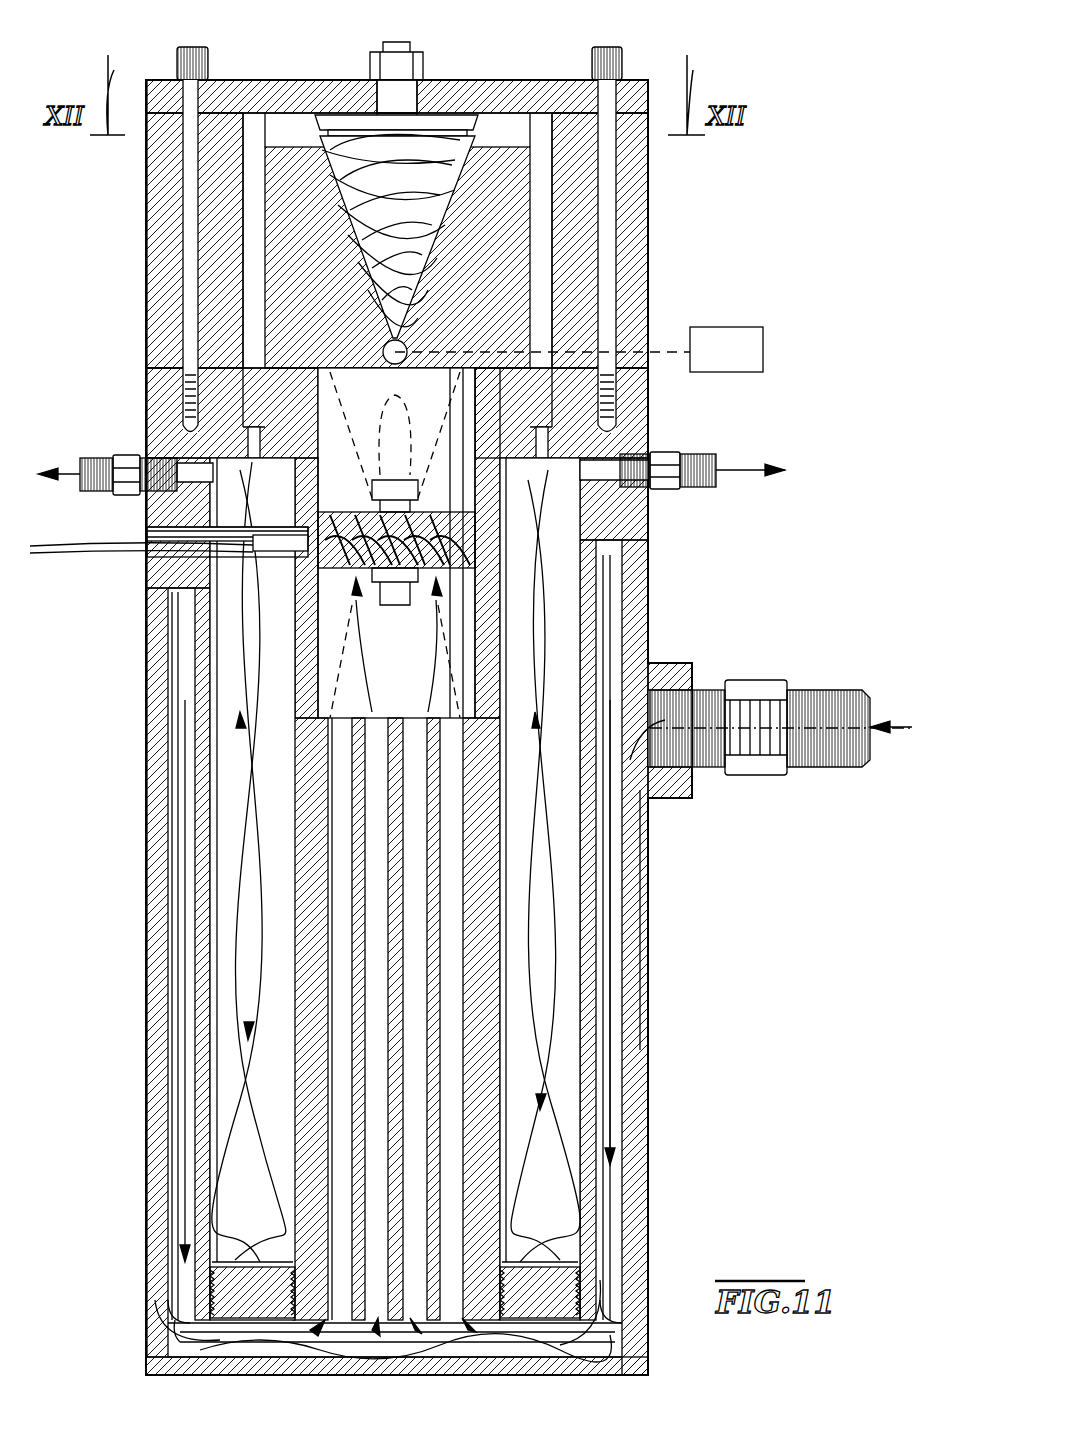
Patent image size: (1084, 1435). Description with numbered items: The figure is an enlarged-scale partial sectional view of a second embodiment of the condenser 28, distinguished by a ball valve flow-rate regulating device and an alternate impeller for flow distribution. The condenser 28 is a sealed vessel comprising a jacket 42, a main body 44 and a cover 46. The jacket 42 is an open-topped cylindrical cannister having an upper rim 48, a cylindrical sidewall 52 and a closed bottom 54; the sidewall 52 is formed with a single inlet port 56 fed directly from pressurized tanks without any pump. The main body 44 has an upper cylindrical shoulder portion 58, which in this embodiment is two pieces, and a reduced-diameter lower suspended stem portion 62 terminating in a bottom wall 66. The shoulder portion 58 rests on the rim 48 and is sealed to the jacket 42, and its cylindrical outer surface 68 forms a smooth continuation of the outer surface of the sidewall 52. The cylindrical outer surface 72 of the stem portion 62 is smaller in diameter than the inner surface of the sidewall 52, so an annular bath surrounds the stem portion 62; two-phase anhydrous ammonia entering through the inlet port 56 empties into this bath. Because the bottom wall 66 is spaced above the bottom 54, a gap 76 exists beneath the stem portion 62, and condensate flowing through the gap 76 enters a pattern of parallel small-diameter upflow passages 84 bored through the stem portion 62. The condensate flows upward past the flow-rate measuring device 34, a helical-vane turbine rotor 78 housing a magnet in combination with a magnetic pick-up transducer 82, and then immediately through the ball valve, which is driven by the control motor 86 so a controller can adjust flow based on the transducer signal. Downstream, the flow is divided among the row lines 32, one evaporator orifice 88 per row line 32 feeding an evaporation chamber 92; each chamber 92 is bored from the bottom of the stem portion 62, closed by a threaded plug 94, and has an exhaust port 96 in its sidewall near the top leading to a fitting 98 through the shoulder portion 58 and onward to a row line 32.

The condenser 28 is at (790, 58).
The row lines 32 is at (50, 480).
The flow-rate measuring device 34 is at (600, 290).
The jacket 42 is at (147, 675).
The main body 44 is at (650, 248).
The cover 46 is at (565, 92).
The upper rim 48 is at (170, 190).
The cylindrical sidewall 52 is at (158, 705).
The closed bottom 54 is at (160, 1362).
The inlet port 56 is at (760, 690).
The upper cylindrical shoulder portion 58 is at (615, 553).
The lower cylindrical suspended stem portion 62 is at (300, 995).
The bottom wall 66 is at (630, 1345).
The cylindrical outer surface 68 is at (640, 528).
The cylindrical outer surface 72 is at (355, 1020).
The gap 76 is at (175, 1340).
The helical-vane turbine rotor 78 is at (445, 110).
The magnetic pick-up transducer 82 is at (185, 642).
The upflow passages 84 is at (395, 1055).
The electric motor 86 is at (700, 330).
The evaporator orifice 88 is at (248, 437).
The evaporation chambers 92 is at (250, 1075).
The threaded plugs 94 is at (230, 1300).
The exhaust port 96 is at (175, 440).
The fitting 98 is at (128, 455).